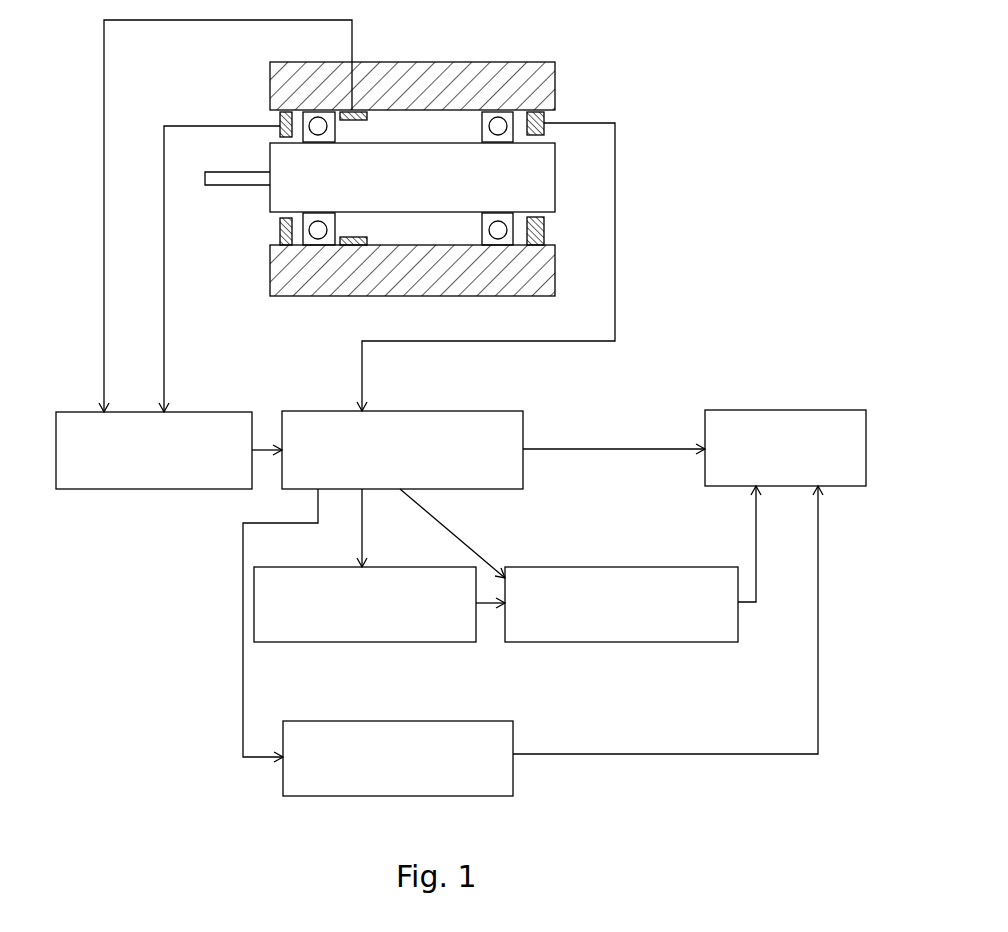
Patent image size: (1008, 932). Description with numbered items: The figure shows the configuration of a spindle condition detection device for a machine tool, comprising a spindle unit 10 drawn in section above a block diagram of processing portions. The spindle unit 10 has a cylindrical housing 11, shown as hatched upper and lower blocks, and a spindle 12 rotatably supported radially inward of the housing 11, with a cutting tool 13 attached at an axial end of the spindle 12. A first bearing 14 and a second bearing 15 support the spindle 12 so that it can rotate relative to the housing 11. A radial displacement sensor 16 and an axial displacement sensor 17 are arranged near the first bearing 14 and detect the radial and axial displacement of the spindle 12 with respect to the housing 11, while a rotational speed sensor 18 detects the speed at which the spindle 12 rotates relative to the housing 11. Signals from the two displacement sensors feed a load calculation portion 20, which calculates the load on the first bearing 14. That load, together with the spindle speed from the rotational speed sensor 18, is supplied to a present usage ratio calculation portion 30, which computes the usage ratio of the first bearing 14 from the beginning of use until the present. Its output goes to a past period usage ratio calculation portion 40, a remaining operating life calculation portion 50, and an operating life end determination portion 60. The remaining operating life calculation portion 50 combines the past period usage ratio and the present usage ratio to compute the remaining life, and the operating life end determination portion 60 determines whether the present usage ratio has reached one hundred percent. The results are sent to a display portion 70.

The spindle unit 10 is at (558, 46).
The housing 11 is at (427, 62).
The spindle 12 is at (268, 207).
The cutting tool 13 is at (233, 187).
The first bearing 14 is at (314, 122).
The second bearing 15 is at (498, 122).
The radial displacement sensor 16 is at (280, 117).
The axial displacement sensor 17 is at (360, 111).
The rotational speed sensor 18 is at (544, 117).
The load calculation portion 20 is at (192, 412).
The present usage ratio calculation portion 30 is at (413, 411).
The past period usage ratio calculation portion 40 is at (330, 650).
The remaining operating life calculation portion 50 is at (550, 642).
The operating life end determination portion 60 is at (407, 720).
The display portion 70 is at (815, 410).